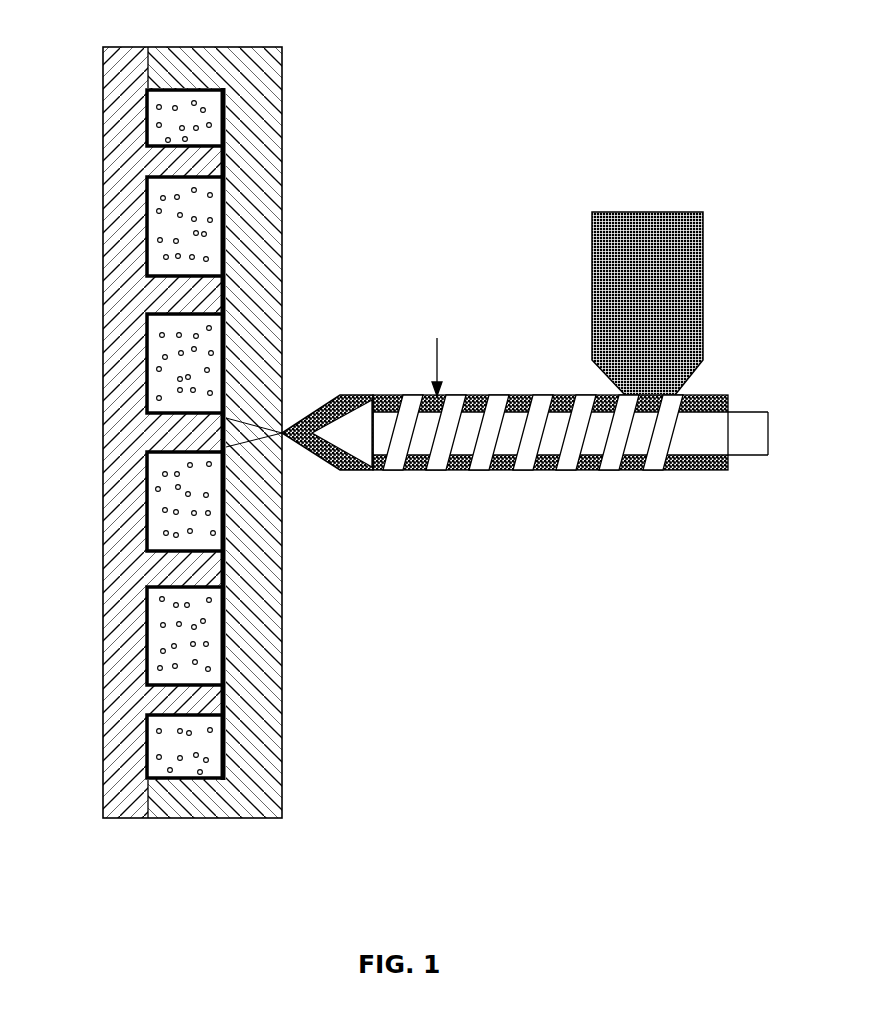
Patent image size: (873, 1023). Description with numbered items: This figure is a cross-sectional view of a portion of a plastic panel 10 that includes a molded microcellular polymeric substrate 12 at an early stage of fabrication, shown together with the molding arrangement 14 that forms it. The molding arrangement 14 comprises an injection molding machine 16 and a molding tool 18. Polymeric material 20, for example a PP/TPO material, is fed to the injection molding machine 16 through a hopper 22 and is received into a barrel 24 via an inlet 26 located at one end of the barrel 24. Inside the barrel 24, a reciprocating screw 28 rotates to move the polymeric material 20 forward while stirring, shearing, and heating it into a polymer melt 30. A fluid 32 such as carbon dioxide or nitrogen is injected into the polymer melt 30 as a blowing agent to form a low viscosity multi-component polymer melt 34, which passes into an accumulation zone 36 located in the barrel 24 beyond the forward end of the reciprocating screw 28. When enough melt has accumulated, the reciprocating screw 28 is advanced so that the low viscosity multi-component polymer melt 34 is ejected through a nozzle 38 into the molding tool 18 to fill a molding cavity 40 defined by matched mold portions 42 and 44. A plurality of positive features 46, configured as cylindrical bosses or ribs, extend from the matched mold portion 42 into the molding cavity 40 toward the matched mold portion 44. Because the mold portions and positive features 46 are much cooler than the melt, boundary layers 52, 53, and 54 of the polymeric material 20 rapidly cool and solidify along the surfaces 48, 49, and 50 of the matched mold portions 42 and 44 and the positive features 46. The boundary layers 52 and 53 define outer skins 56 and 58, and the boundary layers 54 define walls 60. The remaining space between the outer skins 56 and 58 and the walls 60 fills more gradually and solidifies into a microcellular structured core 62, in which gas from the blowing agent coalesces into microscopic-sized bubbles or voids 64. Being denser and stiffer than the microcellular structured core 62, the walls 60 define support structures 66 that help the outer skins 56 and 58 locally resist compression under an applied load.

The plastic panel 10 is at (225, 135).
The molded microcellular polymeric substrate 12 is at (203, 770).
The molding arrangement 14 is at (636, 83).
The injection molding machine 16 is at (752, 201).
The molding tool 18 is at (280, 237).
The polymeric material 20 is at (594, 284).
The hopper 22 is at (703, 287).
The barrel 24 is at (592, 467).
The inlet 26 is at (655, 393).
The reciprocating screw 28 is at (642, 433).
The polymer melt 30 is at (503, 464).
The fluid 32 is at (440, 360).
The low viscosity multi-component polymer melt 34 is at (387, 395).
The accumulation zone 36 is at (323, 397).
The nozzle 38 is at (283, 435).
The molding cavity 40 is at (192, 780).
The matched mold portion 42 is at (103, 810).
The matched mold portion 44 is at (280, 710).
The positive features 46 is at (225, 165).
The surface 48 is at (143, 645).
The surface 49 is at (223, 670).
The surface 50 is at (180, 712).
The boundary layer 52 is at (143, 607).
The boundary layer 53 is at (225, 643).
The boundary layers 54 is at (168, 728).
The outer skin 56 is at (145, 122).
The outer skin 58 is at (225, 103).
The walls 60 is at (152, 162).
The microcellular structured core 62 is at (213, 230).
The microscopic-sized bubbles or voids 64 is at (208, 328).
The support structures 66 is at (185, 95).